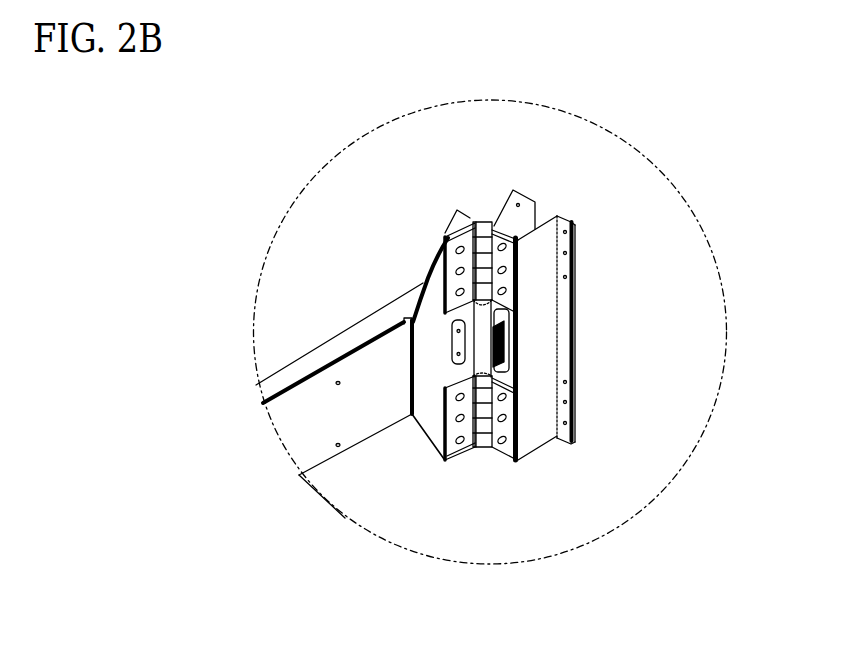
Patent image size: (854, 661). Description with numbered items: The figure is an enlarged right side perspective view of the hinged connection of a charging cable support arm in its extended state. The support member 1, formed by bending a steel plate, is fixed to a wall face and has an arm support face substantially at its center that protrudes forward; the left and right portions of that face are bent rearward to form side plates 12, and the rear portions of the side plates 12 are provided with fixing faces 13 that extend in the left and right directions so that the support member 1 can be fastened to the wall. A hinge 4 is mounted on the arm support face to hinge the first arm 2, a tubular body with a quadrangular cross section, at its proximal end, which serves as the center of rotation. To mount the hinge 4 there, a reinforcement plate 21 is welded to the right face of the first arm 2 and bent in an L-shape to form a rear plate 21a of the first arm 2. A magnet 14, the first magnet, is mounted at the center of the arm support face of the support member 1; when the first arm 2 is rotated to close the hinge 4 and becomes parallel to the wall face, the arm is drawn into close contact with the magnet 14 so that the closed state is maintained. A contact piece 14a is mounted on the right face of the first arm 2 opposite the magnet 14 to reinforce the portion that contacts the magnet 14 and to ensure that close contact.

The support member 1 is at (551, 309).
The first arm 2 is at (303, 357).
The hinge 4 is at (462, 261).
The side plate 12 is at (497, 218).
The fixing face 13 is at (518, 192).
The magnet (first magnet) 14 is at (508, 337).
The contact piece 14a is at (450, 340).
The reinforcement plate 21 is at (432, 278).
The rear plate 21a is at (447, 222).